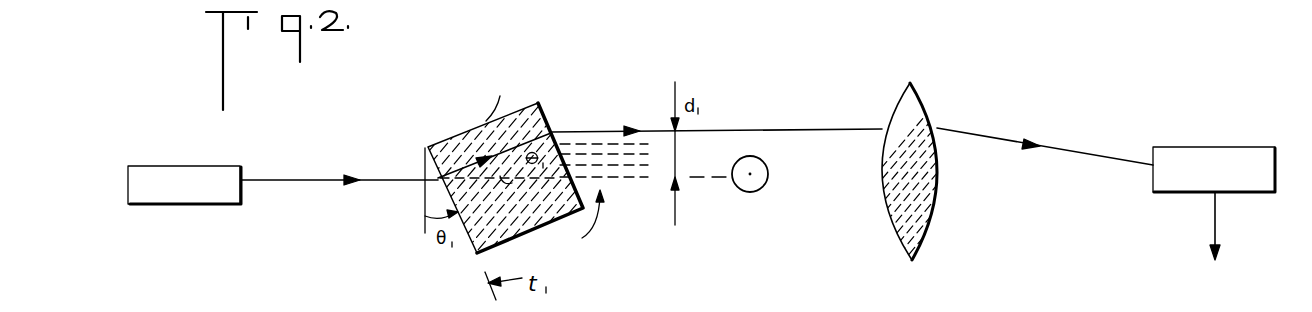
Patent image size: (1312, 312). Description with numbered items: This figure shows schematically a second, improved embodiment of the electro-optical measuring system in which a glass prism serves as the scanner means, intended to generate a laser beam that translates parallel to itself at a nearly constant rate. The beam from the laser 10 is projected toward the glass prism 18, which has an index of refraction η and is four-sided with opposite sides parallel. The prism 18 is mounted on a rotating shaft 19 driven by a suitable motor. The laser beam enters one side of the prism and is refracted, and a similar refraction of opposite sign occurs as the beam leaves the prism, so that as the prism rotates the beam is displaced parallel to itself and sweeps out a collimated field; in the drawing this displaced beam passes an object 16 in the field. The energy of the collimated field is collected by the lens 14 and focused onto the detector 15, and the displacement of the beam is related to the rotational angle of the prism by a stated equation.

The laser 10 is at (238, 165).
The glass prism 18 is at (543, 110).
The rotating shaft 19 is at (604, 247).
The object 16 is at (768, 165).
The lens 14 is at (921, 104).
The detector 15 is at (1186, 147).